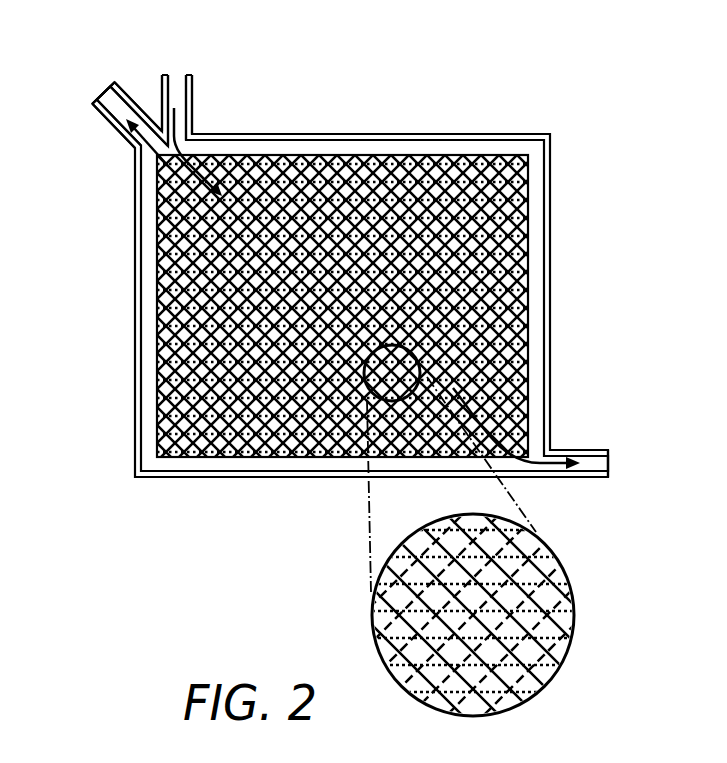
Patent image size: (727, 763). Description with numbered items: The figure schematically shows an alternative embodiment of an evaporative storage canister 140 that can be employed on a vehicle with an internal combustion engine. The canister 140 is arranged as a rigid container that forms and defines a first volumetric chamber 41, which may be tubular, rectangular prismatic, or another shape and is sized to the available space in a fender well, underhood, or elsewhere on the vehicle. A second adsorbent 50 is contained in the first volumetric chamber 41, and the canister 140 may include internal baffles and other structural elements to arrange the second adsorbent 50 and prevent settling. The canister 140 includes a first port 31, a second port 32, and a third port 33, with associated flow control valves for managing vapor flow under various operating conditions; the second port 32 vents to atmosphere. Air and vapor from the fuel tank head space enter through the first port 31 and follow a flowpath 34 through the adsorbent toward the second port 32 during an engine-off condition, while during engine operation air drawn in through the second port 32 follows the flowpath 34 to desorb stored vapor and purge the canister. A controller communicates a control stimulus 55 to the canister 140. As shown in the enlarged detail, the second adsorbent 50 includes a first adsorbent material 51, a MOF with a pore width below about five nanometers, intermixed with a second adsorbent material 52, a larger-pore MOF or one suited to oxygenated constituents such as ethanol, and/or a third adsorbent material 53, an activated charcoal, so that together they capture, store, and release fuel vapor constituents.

The evaporative storage canister 140 is at (549, 123).
The first port 31 is at (175, 88).
The third port 33 is at (110, 102).
The flowpath 34 is at (186, 146).
The first volumetric chamber 41 is at (530, 242).
The second adsorbent 50 is at (505, 300).
The control stimulus 55 is at (272, 457).
The second port 32 is at (597, 462).
The first adsorbent material 51 is at (567, 588).
The second adsorbent material 52 is at (565, 658).
The third adsorbent material 53 is at (558, 695).